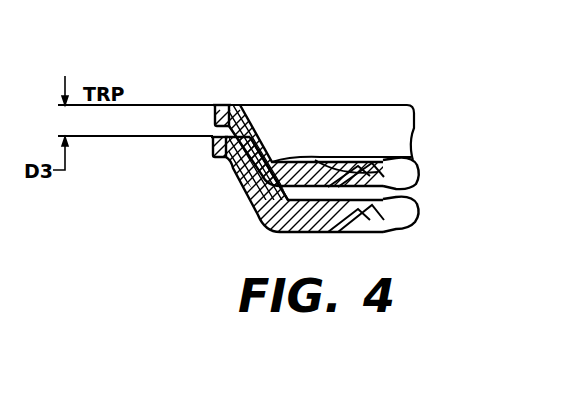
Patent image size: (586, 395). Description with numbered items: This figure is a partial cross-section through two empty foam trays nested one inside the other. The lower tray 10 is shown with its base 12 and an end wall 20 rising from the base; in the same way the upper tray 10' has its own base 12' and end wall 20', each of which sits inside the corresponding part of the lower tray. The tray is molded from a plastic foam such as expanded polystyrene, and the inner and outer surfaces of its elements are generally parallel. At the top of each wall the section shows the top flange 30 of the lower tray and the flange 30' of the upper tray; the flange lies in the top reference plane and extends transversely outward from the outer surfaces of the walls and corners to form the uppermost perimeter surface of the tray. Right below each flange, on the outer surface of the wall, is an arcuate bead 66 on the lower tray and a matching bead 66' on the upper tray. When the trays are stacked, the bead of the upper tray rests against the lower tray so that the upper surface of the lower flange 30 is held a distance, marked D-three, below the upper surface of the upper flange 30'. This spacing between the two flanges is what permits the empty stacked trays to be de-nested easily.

The tray 10 is at (250, 188).
The upper tray 10' is at (250, 135).
The base 12 is at (462, 219).
The base of upper tray 12' is at (464, 156).
The end wall 20 is at (317, 134).
The end wall of upper tray 20' is at (340, 113).
The top flange 30 is at (176, 166).
The flange of upper tray 30' is at (253, 76).
The bead 66 is at (201, 189).
The bead of upper tray 66' is at (186, 99).